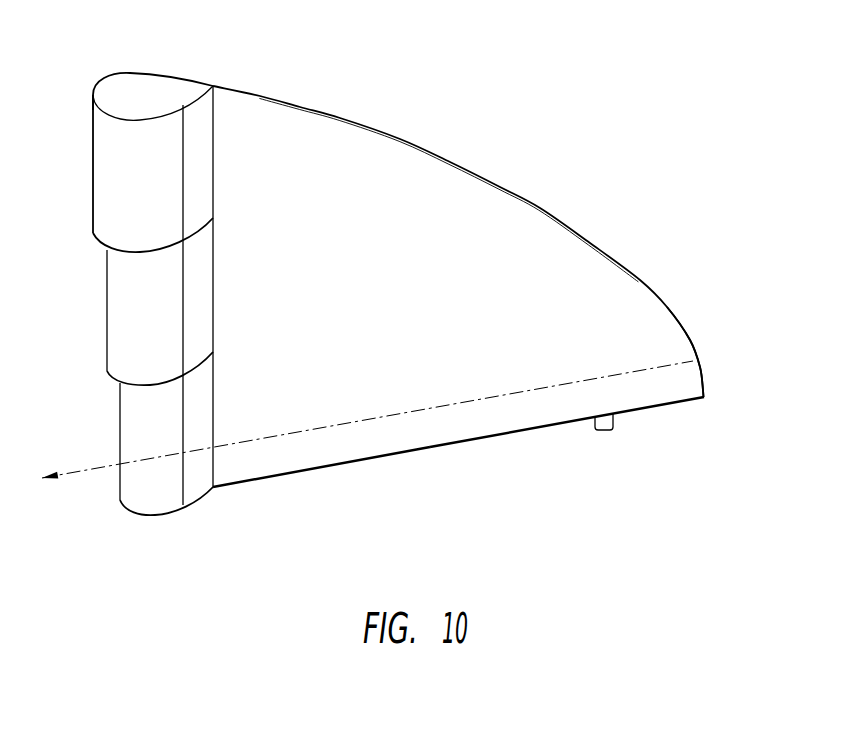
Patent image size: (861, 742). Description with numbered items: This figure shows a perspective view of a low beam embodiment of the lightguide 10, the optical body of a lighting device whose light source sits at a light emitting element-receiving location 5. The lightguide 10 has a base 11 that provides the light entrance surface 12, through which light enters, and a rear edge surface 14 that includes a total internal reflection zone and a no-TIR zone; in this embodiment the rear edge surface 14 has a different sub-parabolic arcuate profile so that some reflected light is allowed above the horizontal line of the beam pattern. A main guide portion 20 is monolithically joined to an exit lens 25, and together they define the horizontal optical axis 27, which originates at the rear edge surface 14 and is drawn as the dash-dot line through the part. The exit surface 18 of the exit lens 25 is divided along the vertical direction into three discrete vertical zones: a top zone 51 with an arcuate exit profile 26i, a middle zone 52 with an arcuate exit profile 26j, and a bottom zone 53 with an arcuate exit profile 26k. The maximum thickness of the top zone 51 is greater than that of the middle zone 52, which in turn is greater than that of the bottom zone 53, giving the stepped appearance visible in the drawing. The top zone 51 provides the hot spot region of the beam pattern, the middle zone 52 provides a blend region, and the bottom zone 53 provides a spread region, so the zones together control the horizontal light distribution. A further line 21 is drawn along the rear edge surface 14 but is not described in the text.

The lightguide 10 is at (663, 213).
The light emitting element-receiving location 5 is at (617, 418).
The base 11 is at (340, 465).
The light entrance surface 12 is at (527, 430).
The rear edge surface 14 is at (325, 110).
The exit surface 18 is at (92, 93).
The main guide portion 20 is at (653, 317).
The inner surface line 21 is at (233, 110).
The exit lens 25 is at (135, 95).
The arcuate exit profile 26i is at (117, 295).
The arcuate exit profile 26j is at (121, 317).
The arcuate exit profile 26k is at (121, 449).
The optical axis 27 is at (645, 368).
The top zone 51 is at (123, 197).
The middle zone 52 is at (125, 337).
The bottom zone 53 is at (135, 443).